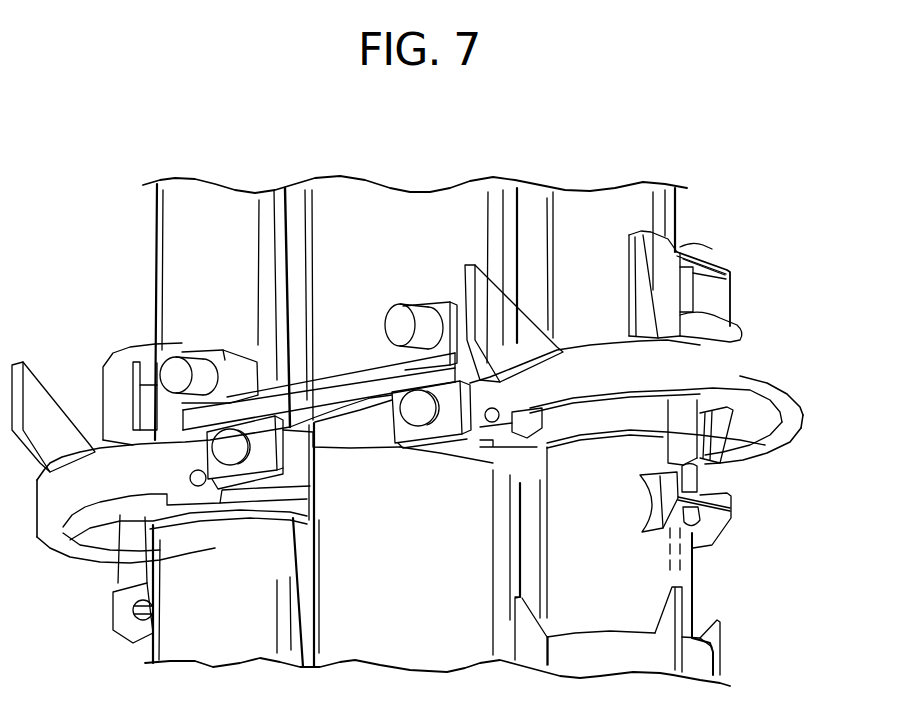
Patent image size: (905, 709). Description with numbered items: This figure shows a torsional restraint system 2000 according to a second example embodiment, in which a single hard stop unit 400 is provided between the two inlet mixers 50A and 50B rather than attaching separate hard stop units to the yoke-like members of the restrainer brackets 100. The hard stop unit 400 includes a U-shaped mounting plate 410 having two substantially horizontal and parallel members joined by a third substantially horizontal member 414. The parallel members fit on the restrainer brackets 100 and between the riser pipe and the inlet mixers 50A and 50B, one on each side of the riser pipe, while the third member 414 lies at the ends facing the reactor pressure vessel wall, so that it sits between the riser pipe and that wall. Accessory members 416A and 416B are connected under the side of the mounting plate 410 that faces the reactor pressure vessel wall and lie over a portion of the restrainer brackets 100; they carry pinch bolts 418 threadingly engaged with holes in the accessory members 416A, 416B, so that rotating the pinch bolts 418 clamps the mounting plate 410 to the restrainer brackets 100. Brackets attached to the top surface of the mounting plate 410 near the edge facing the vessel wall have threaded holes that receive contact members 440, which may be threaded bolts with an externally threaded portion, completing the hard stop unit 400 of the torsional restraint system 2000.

The torsional restraint system 2000 is at (693, 166).
The inlet mixer 50A is at (178, 232).
The inlet mixer 50B is at (640, 222).
The restrainer bracket 100 is at (806, 411).
The hard stop unit 400 is at (353, 332).
The mounting plate 410 is at (318, 388).
The third substantially horizontal member 414 is at (343, 407).
The accessory member 416A is at (405, 436).
The accessory member 416B is at (265, 472).
The pinch bolt 418 is at (424, 406).
The contact member 440 is at (399, 306).